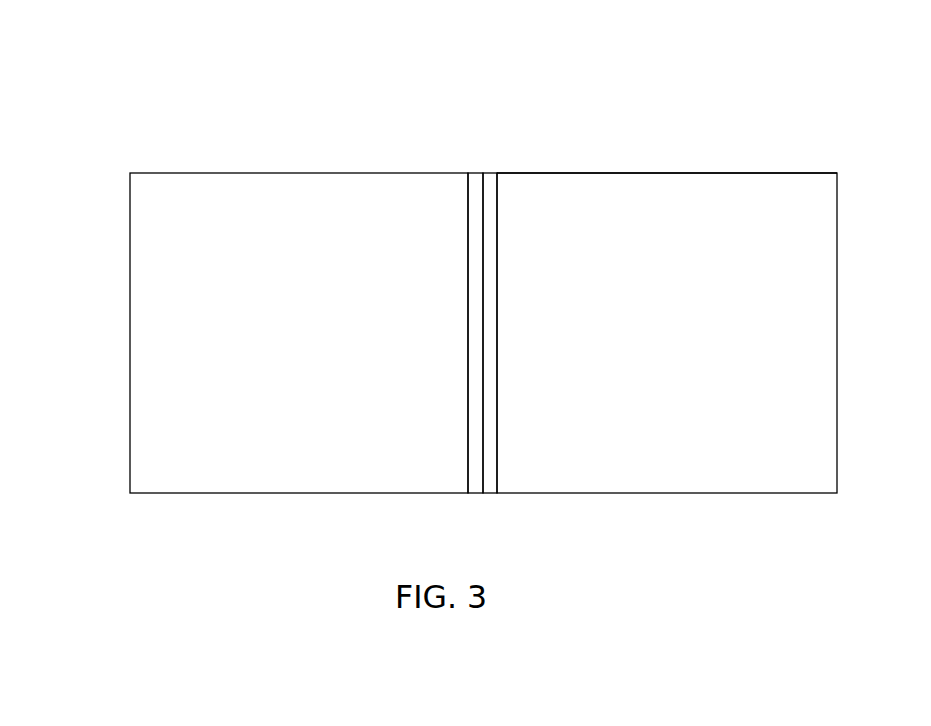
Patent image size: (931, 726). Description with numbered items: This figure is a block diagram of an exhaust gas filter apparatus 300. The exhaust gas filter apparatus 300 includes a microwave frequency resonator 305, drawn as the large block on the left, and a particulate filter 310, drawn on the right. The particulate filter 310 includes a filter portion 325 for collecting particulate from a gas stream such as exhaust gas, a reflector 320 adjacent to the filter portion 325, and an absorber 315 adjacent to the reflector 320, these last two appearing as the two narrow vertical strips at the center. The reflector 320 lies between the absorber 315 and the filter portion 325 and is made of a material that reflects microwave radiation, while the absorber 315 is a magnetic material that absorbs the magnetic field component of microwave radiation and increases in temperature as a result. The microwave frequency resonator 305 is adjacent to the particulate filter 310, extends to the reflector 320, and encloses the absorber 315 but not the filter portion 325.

The exhaust gas filter apparatus 300 is at (100, 63).
The microwave frequency resonator 305 is at (315, 169).
The particulate filter 310 is at (668, 169).
The absorber 315 is at (475, 185).
The reflector 320 is at (488, 185).
The filter portion 325 is at (745, 187).